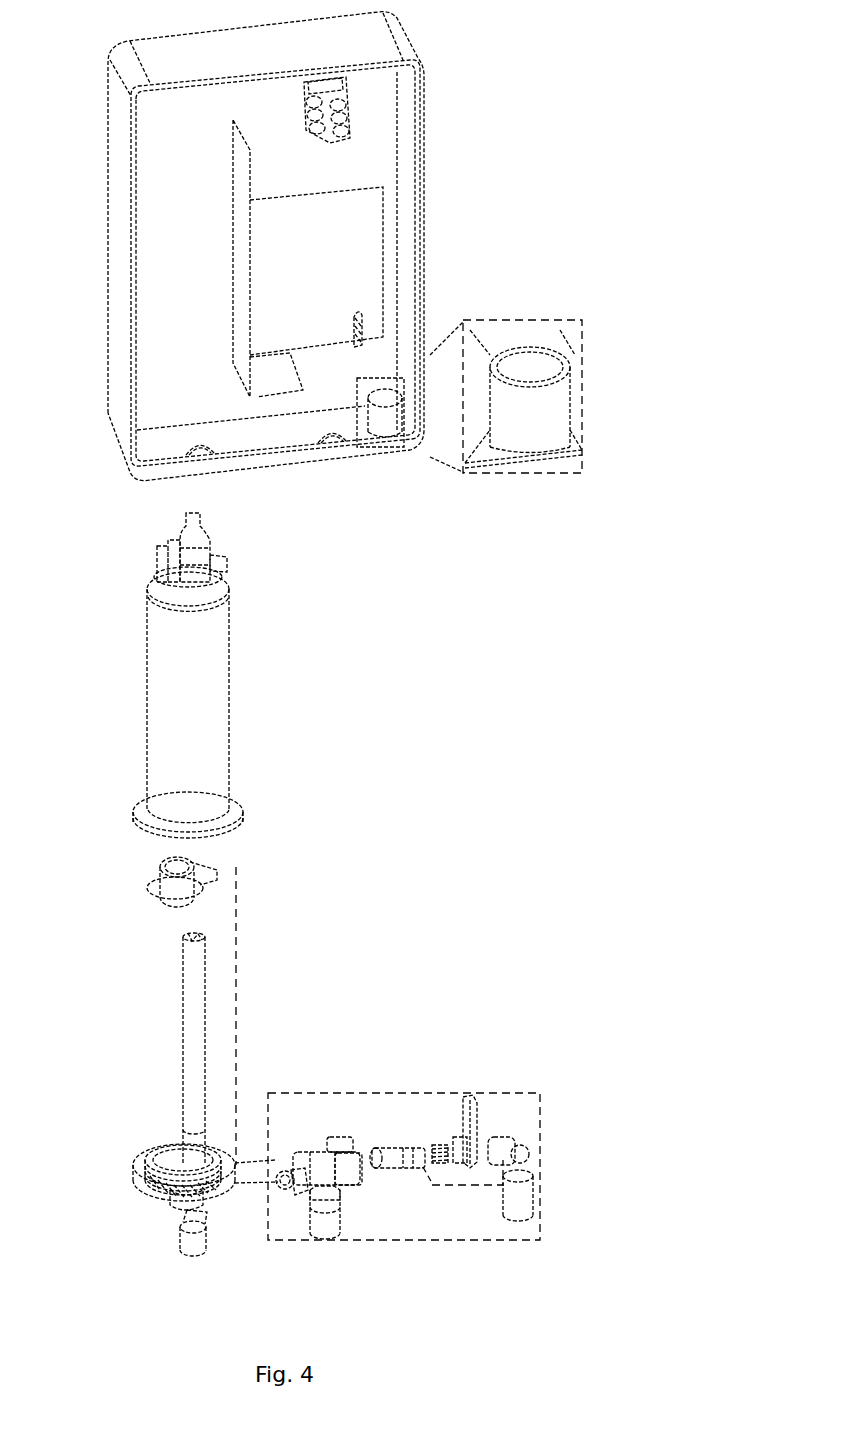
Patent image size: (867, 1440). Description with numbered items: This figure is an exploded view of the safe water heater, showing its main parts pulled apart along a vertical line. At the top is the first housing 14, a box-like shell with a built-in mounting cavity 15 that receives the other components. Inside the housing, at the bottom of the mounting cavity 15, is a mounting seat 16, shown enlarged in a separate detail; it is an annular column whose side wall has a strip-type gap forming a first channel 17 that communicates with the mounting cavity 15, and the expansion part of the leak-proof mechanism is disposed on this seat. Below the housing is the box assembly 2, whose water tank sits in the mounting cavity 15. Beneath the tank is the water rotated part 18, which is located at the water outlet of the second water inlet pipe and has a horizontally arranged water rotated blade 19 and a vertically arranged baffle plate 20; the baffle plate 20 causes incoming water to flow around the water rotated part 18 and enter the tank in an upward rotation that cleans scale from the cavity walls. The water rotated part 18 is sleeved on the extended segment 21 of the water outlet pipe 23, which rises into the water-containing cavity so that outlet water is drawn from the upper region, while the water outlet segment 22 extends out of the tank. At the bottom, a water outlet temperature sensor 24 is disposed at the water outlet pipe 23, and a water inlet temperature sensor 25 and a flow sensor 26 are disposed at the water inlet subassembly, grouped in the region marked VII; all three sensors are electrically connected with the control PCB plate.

The box assembly 2 is at (210, 575).
The first housing 14 is at (120, 212).
The mounting cavity 15 is at (160, 307).
The mounting seat 16 is at (533, 428).
The first channel 17 is at (467, 465).
The water rotated part 18 is at (247, 859).
The water rotated blade 19 is at (217, 868).
The baffle plate 20 is at (226, 882).
The extended segment 21 is at (187, 1135).
The water outlet segment 22 is at (179, 1184).
The water outlet pipe 23 is at (158, 1082).
The water outlet temperature sensor 24 is at (197, 1230).
The water inlet temperature sensor 25 is at (287, 1189).
The flow sensor 26 is at (335, 1235).
The detail view VII is at (393, 1092).